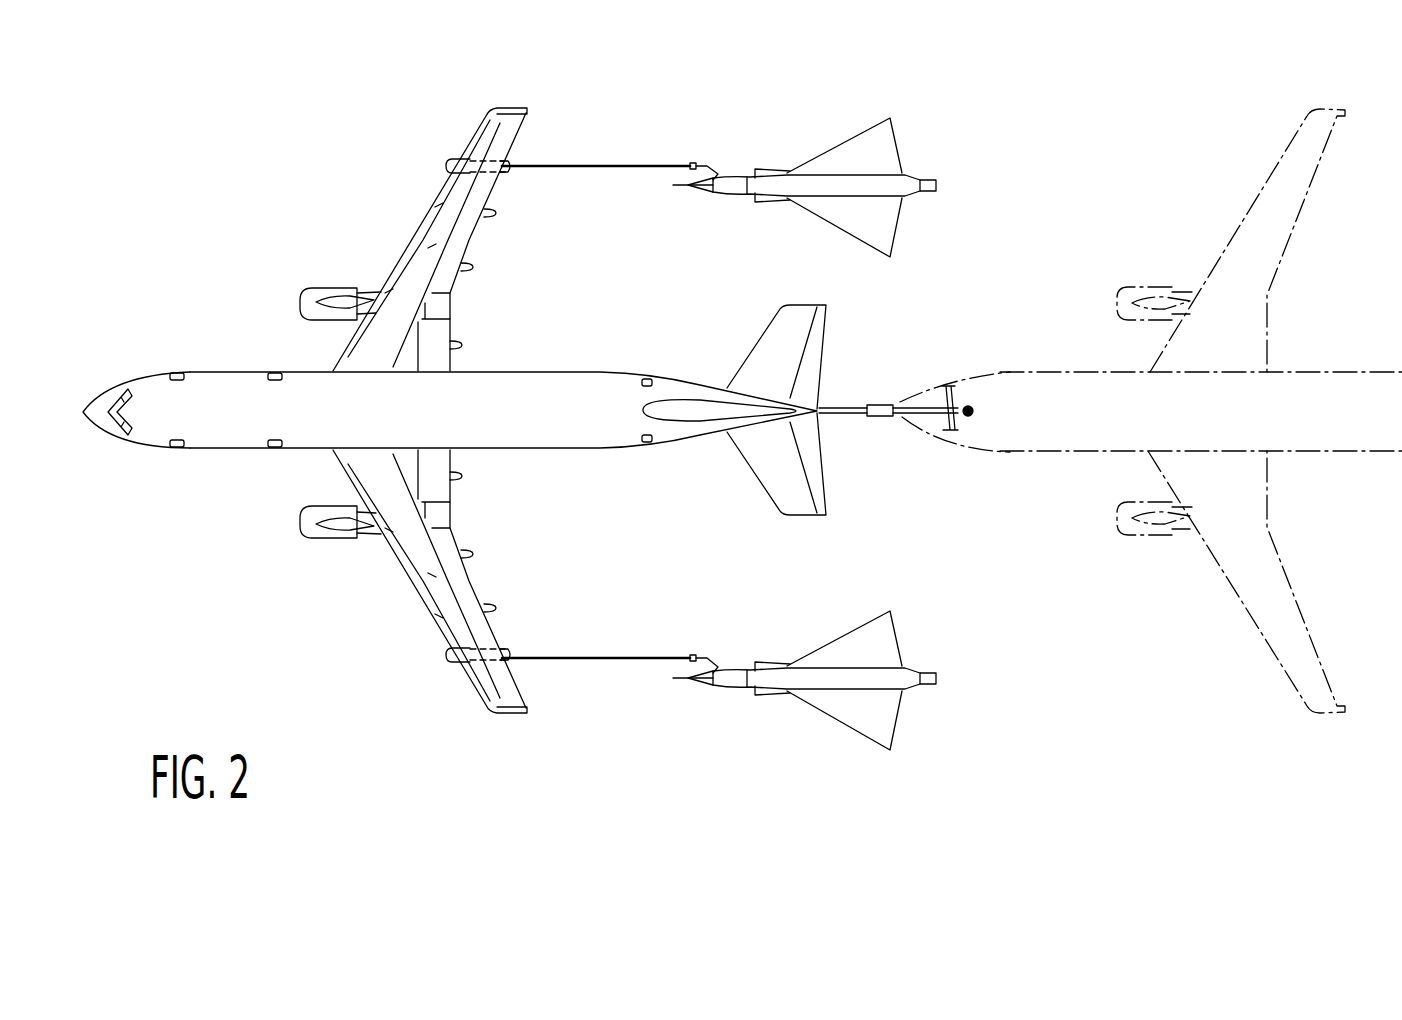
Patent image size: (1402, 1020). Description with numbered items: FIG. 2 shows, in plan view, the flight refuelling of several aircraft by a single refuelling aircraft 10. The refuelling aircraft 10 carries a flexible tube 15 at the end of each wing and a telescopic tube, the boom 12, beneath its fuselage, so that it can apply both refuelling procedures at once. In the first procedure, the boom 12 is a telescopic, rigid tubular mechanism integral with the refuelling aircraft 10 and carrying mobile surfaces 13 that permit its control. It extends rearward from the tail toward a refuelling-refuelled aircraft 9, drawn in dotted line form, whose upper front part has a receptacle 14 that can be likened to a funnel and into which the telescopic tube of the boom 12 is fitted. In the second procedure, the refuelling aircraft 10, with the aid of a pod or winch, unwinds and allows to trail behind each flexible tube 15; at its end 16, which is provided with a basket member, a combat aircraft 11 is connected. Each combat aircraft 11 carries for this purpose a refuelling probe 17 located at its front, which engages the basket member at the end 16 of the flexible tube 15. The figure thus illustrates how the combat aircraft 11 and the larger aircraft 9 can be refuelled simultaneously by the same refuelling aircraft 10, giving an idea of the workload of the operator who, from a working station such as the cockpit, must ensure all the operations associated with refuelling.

The refuelling-refuelled aircraft 9 is at (1272, 180).
The refuelling aircraft 10 is at (198, 378).
The combat aircraft 11 is at (882, 150).
The boom 12 is at (857, 407).
The mobile surfaces 13 is at (955, 400).
The receptacle 14 is at (972, 415).
The flexible tube 15 is at (617, 162).
The end 16 is at (692, 162).
The refuelling probe 17 is at (707, 160).